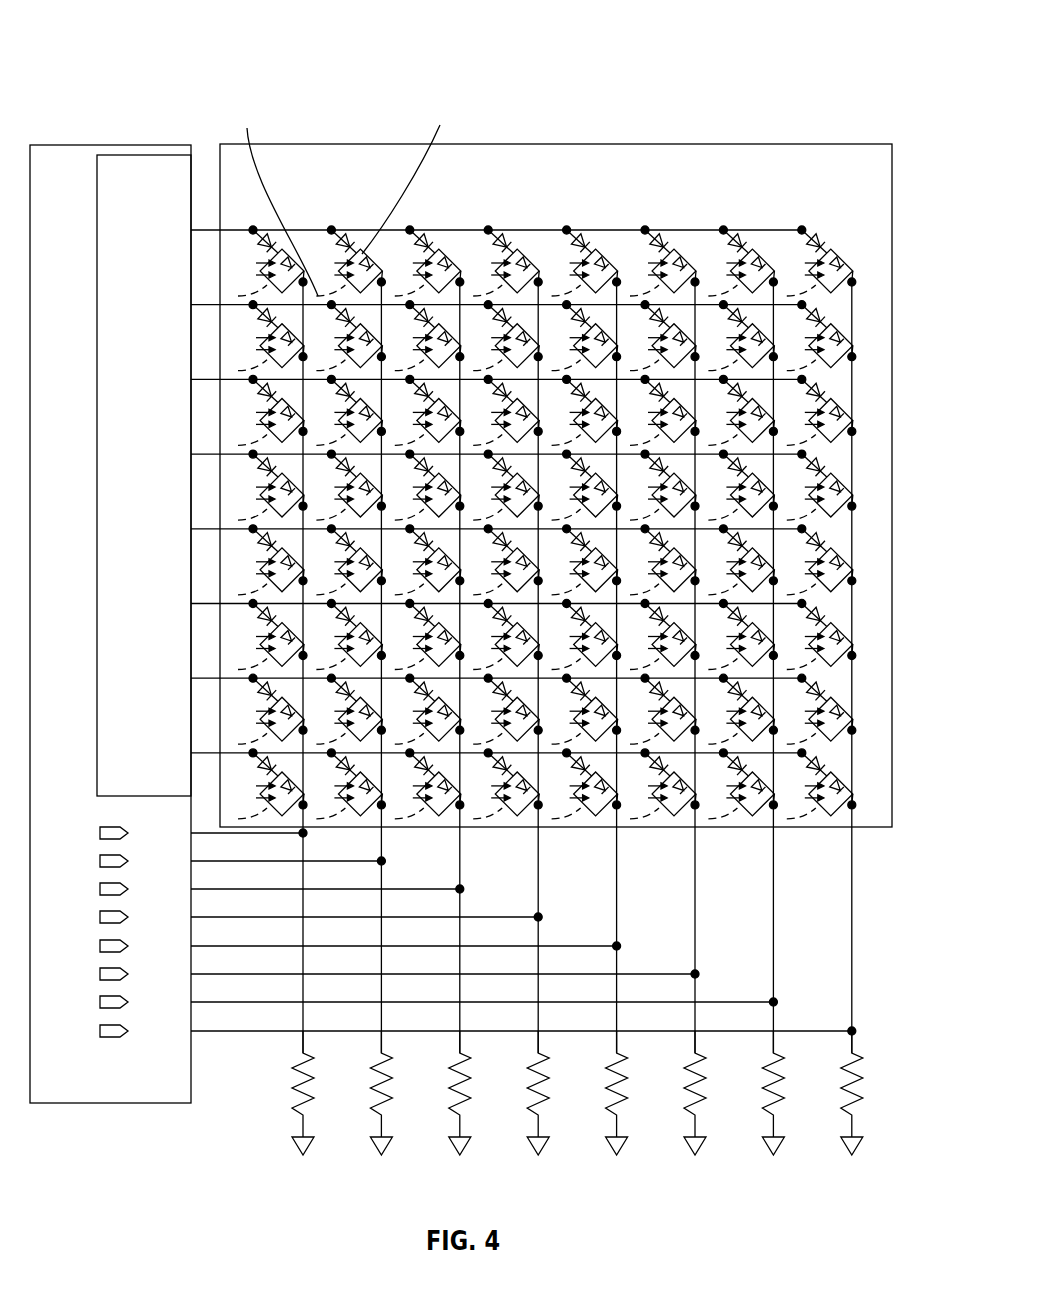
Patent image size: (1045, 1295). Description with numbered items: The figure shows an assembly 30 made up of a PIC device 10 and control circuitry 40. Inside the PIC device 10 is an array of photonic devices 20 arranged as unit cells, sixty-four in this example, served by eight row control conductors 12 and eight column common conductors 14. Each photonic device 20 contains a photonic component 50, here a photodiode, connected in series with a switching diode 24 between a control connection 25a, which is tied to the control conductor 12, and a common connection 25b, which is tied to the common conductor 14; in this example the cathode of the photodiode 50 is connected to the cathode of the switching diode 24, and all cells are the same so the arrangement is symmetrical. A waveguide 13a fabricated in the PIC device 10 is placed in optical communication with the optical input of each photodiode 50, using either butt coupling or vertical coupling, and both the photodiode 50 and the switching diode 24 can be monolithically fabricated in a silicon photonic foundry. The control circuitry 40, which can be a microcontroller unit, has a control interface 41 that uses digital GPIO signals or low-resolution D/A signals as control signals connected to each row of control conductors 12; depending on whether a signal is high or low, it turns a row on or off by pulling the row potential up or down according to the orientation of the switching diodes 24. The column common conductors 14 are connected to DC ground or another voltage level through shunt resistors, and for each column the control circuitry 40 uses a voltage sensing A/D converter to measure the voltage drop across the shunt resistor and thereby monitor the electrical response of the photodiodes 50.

The assembly 30 is at (116, 27).
The PIC device 10 is at (697, 143).
The control conductor 12 is at (771, 229).
The common conductor 14 is at (852, 913).
The photonic device 20 is at (515, 838).
The waveguide 13a is at (574, 816).
The photonic component 50 is at (677, 824).
The switching diode 24 is at (738, 771).
The control connection 25a is at (810, 753).
The common connection 25b is at (856, 803).
The control circuitry 40 is at (126, 146).
The control interface 41 is at (100, 146).